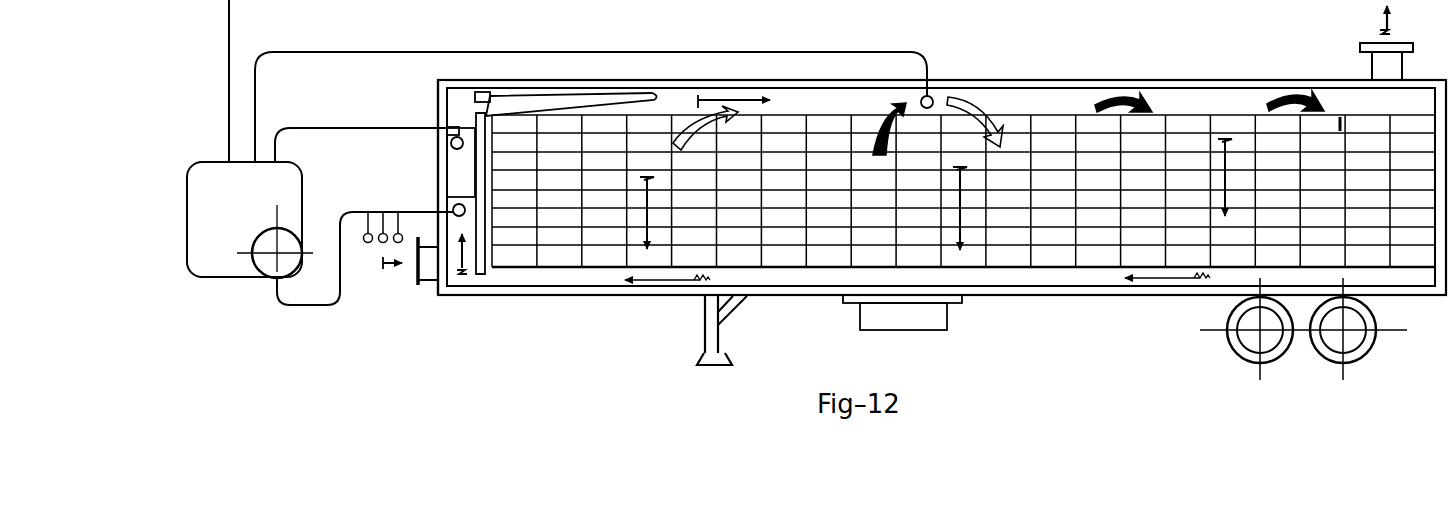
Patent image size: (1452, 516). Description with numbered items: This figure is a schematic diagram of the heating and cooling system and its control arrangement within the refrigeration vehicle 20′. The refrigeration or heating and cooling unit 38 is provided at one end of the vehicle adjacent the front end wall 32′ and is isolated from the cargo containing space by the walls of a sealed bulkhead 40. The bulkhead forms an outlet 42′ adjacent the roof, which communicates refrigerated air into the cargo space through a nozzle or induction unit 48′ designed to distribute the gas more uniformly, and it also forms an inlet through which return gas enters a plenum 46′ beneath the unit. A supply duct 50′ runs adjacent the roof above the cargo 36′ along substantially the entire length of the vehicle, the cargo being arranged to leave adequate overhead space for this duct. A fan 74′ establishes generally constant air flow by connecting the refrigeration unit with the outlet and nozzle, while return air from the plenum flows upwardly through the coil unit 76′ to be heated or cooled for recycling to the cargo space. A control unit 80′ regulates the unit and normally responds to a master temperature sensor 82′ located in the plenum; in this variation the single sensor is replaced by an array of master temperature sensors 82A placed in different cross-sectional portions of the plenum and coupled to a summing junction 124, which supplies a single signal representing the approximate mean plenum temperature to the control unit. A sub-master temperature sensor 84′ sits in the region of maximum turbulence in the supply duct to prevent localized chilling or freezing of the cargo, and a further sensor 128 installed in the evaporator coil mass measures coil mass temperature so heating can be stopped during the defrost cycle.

The refrigeration vehicle 20′ is at (1025, 78).
The front end wall 32′ is at (436, 100).
The cargo 36′ is at (1150, 196).
The refrigeration or heating and cooling unit 38 is at (947, 330).
The bulkhead 40 is at (490, 267).
The outlet 42′ is at (486, 107).
The plenum 46′ is at (472, 240).
The nozzle or induction unit 48′ is at (580, 90).
The supply duct 50′ is at (722, 94).
The fan 74′ is at (578, 81).
The coil unit 76′ is at (460, 181).
The control unit 80′ is at (187, 212).
The master temperature sensor 82′ is at (488, 205).
The array of master temperature sensors 82A is at (377, 245).
The sub-master temperature sensor 84′ is at (930, 96).
The summing junction 124 is at (255, 265).
The coil mass sensor 128 is at (452, 139).